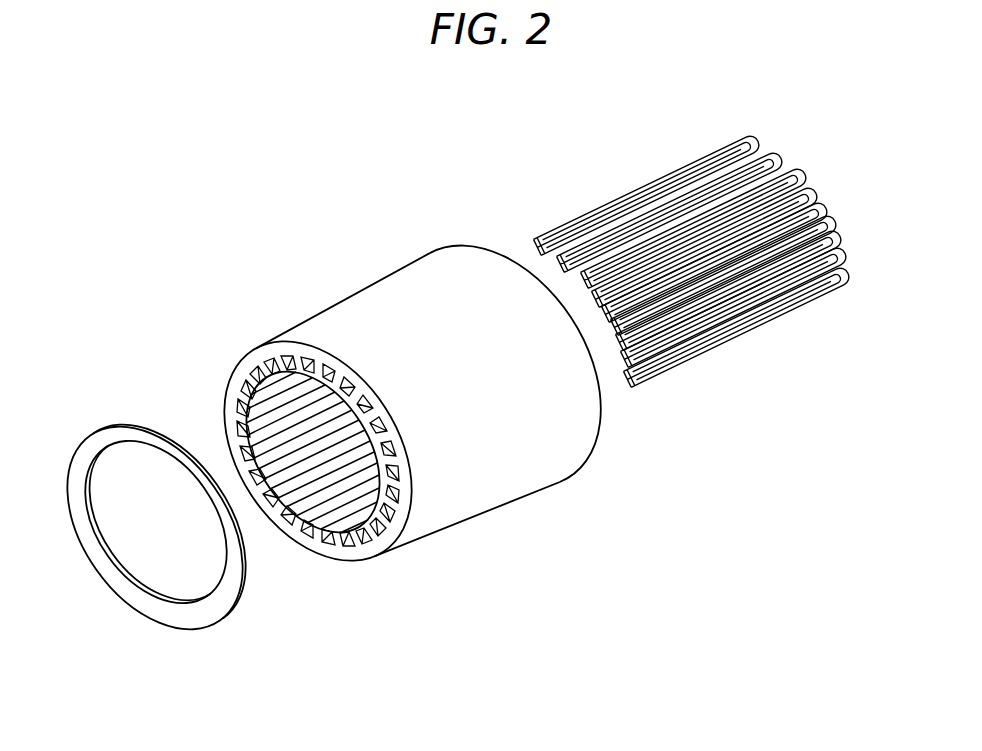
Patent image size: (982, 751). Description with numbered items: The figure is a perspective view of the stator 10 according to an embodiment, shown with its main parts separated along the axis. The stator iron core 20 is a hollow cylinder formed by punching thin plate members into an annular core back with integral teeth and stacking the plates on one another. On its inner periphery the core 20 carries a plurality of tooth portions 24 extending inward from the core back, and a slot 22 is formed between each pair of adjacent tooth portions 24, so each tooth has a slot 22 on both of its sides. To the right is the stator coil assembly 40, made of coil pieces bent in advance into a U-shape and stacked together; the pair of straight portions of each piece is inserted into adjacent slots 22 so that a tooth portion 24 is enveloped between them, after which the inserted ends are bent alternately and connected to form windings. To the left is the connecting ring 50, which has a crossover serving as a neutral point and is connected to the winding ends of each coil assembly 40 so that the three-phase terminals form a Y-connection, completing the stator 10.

The stator 10 is at (443, 215).
The stator iron core 20 is at (365, 312).
The slot 22 is at (253, 350).
The tooth portion 24 is at (300, 345).
The stator coil assembly 40 is at (772, 162).
The connecting ring 50 is at (108, 428).